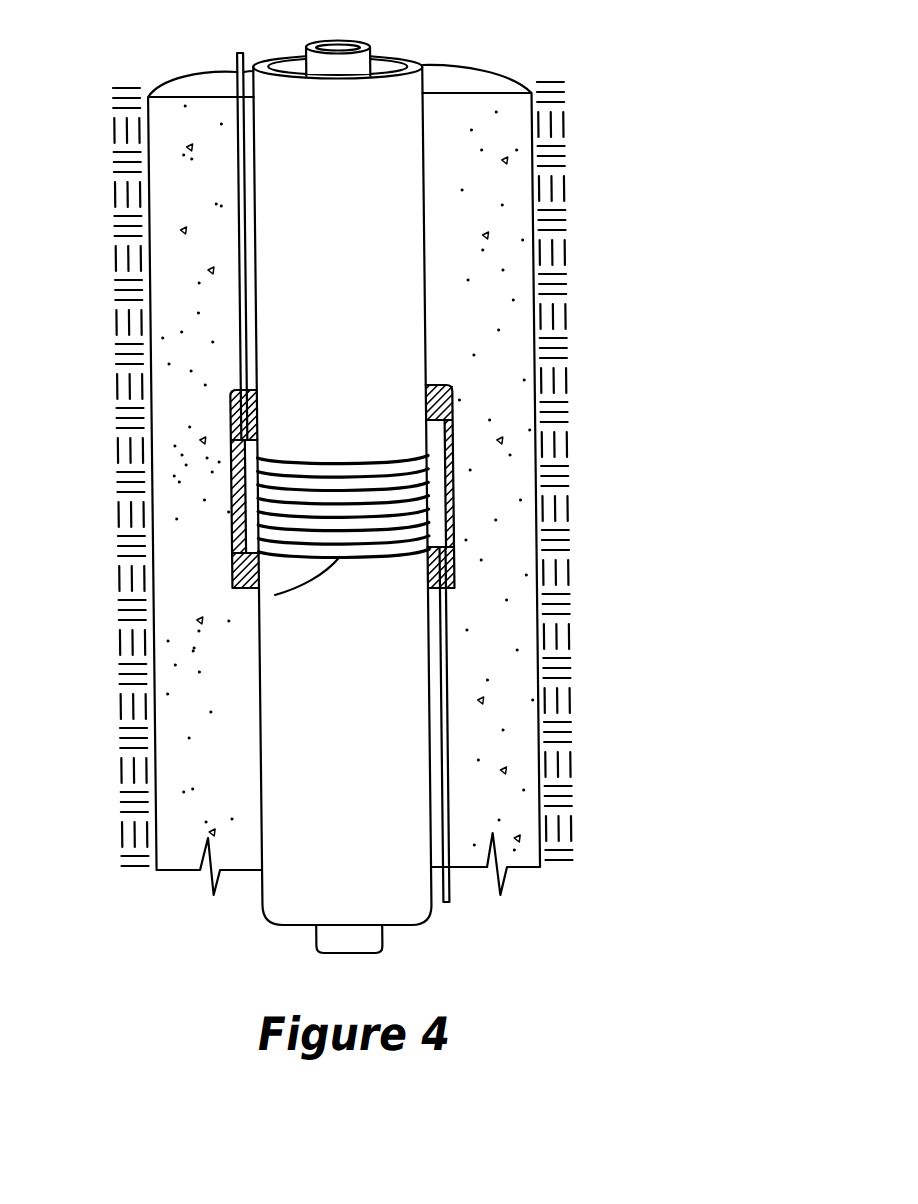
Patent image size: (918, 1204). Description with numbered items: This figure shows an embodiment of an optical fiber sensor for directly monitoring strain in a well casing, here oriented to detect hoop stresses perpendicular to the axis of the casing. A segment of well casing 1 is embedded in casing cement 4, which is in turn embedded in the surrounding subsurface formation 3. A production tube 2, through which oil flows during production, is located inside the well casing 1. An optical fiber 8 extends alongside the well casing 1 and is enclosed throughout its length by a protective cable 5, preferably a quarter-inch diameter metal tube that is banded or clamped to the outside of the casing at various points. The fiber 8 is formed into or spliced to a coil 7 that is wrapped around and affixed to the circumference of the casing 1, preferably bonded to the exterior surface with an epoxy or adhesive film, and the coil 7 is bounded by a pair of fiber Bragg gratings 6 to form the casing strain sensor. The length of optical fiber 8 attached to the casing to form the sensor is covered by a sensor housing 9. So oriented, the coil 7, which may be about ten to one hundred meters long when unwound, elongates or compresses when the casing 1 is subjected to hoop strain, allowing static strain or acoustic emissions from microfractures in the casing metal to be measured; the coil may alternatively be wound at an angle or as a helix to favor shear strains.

The well casing 1 is at (421, 154).
The production tube 2 is at (354, 58).
The subsurface formation 3 is at (572, 767).
The casing cement 4 is at (484, 312).
The protective cable 5 is at (235, 137).
The fiber Bragg gratings 6 is at (268, 595).
The coil 7 is at (414, 497).
The optical fiber 8 is at (245, 442).
The sensor housing 9 is at (448, 410).